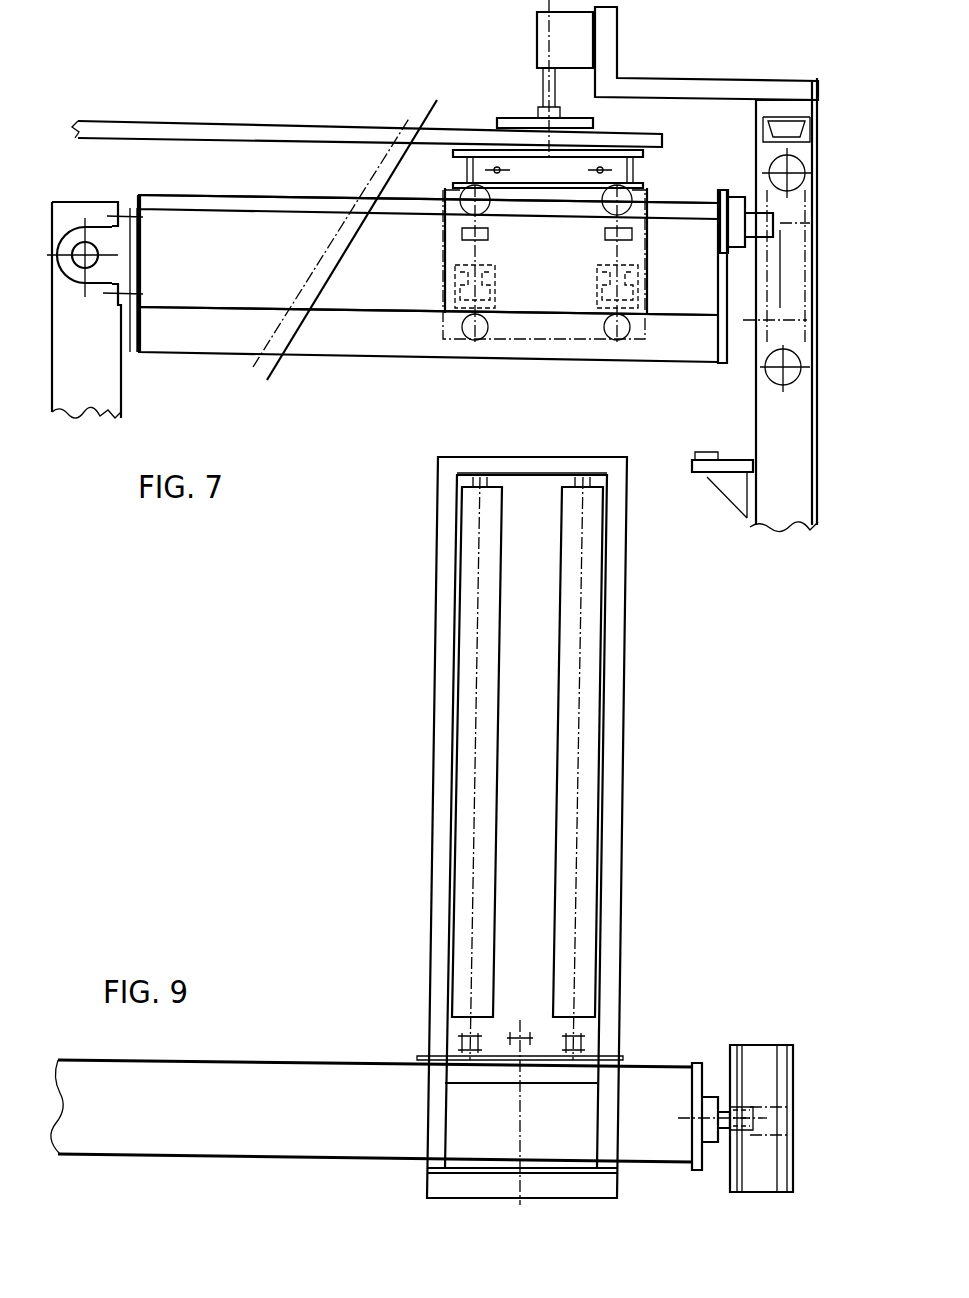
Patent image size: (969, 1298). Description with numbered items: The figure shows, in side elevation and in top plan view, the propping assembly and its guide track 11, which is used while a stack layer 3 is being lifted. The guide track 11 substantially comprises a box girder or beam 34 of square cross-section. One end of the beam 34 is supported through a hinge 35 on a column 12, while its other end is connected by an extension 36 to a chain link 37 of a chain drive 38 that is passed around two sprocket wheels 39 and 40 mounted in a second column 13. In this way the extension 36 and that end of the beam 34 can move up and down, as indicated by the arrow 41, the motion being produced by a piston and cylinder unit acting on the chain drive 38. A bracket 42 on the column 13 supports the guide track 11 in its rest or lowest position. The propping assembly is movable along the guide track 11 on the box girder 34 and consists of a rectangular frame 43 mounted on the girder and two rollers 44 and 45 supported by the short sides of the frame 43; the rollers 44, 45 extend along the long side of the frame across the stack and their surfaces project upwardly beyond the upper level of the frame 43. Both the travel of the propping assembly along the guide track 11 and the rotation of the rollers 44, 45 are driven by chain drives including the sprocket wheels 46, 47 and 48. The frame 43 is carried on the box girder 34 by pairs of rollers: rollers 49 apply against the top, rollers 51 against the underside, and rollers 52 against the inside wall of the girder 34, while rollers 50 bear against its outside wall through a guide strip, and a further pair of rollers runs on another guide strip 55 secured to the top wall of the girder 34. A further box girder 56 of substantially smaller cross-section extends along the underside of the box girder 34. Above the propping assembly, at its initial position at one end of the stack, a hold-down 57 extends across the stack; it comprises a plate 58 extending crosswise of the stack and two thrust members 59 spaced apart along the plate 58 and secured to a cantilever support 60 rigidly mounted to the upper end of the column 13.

In FIG. 7, the stack layer 3 is at (245, 133).
In FIG. 7, the guide track 11 is at (227, 168).
In FIG. 9, the guide track 11 is at (244, 1052).
In FIG. 7, the column 12 is at (112, 392).
In FIG. 7, the column 13 is at (745, 517).
In FIG. 9, the column 13 is at (768, 1072).
In FIG. 7, the box girder 34 is at (210, 280).
In FIG. 7, the hinge 35 is at (82, 243).
In FIG. 7, the extension 36 is at (743, 192).
In FIG. 9, the extension 36 is at (708, 1097).
In FIG. 7, the chain link 37 is at (755, 208).
In FIG. 7, the chain drive 38 is at (758, 356).
In FIG. 7, the sprocket wheel 39 is at (778, 158).
In FIG. 7, the sprocket wheel 40 is at (778, 378).
In FIG. 7, the arrow 41 is at (779, 285).
In FIG. 7, the bracket 42 is at (703, 452).
In FIG. 7, the rectangular frame 43 is at (633, 173).
In FIG. 9, the rectangular frame 43 is at (430, 722).
In FIG. 7, the roller 44 is at (502, 151).
In FIG. 9, the roller 44 is at (463, 777).
In FIG. 7, the roller 45 is at (595, 152).
In FIG. 9, the roller 45 is at (585, 773).
In FIG. 9, the sprocket wheel 46 is at (517, 1032).
In FIG. 9, the sprocket wheel 47 is at (463, 1045).
In FIG. 9, the sprocket wheel 48 is at (577, 1032).
In FIG. 7, the rollers 49 is at (466, 192).
In FIG. 7, the rollers 50 is at (462, 233).
In FIG. 7, the rollers 51 is at (466, 330).
In FIG. 7, the rollers 52 is at (492, 336).
In FIG. 7, the guide strip 55 is at (297, 207).
In FIG. 7, the box girder 56 is at (578, 356).
In FIG. 7, the hold-down 57 is at (540, 96).
In FIG. 7, the plate 58 is at (512, 126).
In FIG. 7, the thrust member 59 is at (600, 36).
In FIG. 7, the cantilever support 60 is at (670, 96).